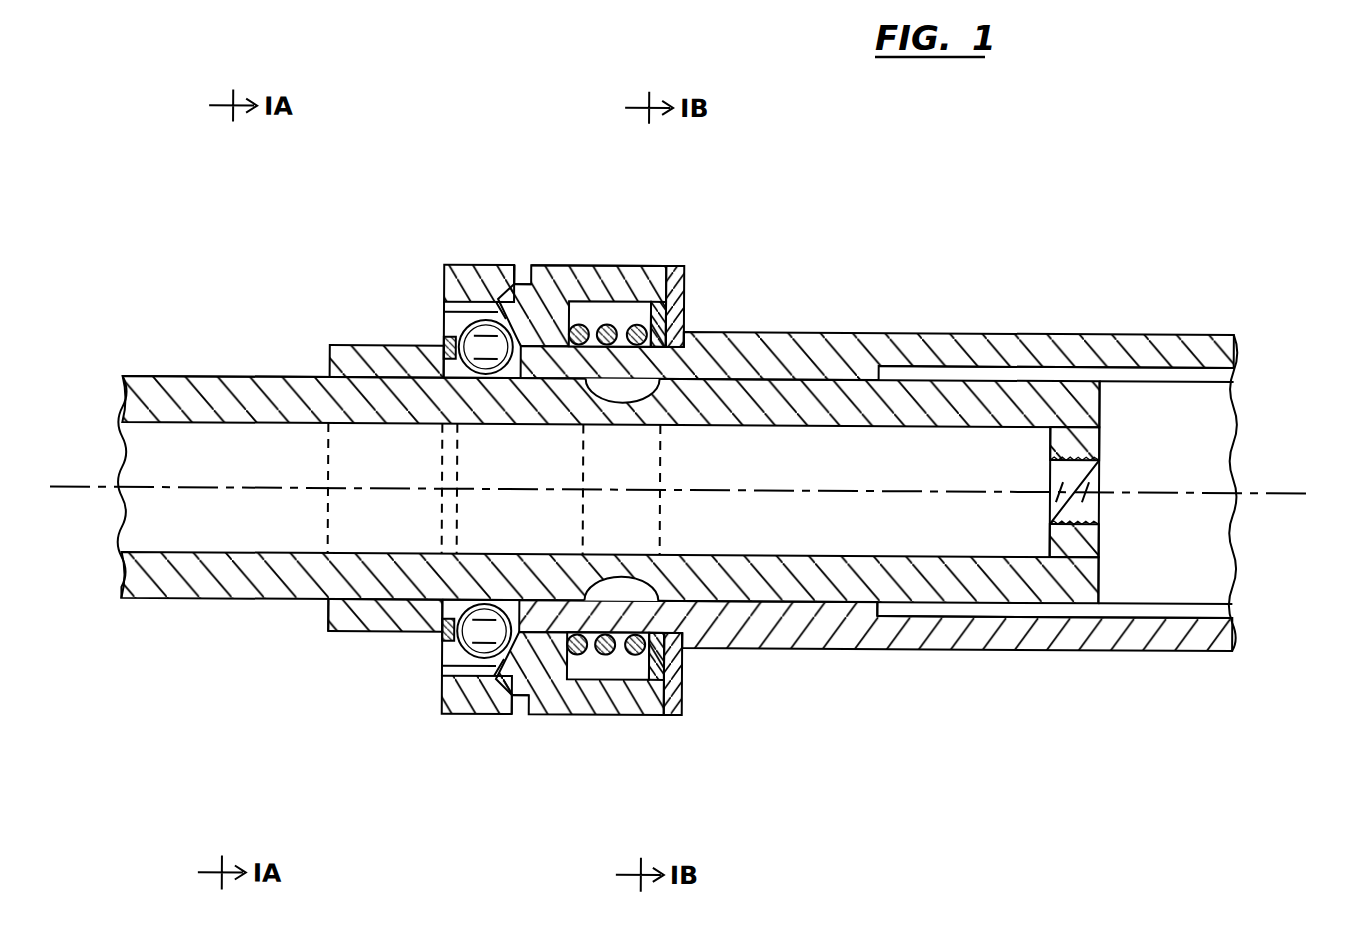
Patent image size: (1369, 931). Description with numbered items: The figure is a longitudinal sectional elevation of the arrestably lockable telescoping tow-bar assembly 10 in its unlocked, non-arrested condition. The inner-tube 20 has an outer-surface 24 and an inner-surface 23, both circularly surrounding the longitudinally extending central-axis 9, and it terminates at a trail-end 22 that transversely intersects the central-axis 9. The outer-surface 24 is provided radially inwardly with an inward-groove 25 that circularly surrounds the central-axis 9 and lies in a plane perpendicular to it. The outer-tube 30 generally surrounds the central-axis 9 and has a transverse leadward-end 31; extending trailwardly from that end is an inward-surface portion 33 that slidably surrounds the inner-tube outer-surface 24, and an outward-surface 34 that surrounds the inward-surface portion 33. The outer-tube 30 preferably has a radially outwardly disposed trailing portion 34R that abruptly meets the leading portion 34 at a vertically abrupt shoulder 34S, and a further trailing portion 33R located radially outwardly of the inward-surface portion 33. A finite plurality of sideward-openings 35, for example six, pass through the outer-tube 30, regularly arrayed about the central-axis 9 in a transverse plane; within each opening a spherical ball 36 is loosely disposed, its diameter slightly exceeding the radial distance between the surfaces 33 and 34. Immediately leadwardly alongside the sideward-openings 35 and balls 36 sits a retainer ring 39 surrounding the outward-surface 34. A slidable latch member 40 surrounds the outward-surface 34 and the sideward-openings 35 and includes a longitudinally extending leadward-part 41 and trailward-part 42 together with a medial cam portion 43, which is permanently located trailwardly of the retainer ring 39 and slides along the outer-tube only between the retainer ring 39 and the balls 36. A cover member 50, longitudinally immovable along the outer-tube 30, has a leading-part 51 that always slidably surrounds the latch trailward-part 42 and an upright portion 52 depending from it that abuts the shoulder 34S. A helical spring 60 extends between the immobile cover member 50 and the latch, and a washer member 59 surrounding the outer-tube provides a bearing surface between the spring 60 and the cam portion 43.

The central-axis 9 is at (1263, 478).
The arrestably lockable telescoping tow-bar assembly 10 is at (412, 124).
The inner-tube 20 is at (124, 374).
The trail-end 22 is at (1100, 428).
The inner-surface 23 is at (160, 553).
The outer-surface 24 is at (185, 378).
The inward-groove 25 is at (635, 392).
The outer-tube 30 is at (952, 330).
The leadward-end 31 is at (329, 356).
The inward-surface portion 33 is at (325, 605).
The trailing portion 33R is at (1210, 620).
The outward-surface 34 is at (340, 636).
The trailing portion 34R is at (1128, 332).
The shoulder 34S is at (688, 332).
The sideward-openings 35 is at (505, 385).
The spherical ball 36 is at (485, 489).
The retainer ring 39 is at (443, 347).
The slidable latch member 40 is at (466, 263).
The leadward-part 41 is at (440, 700).
The trailward-part 42 is at (522, 280).
The medial cam portion 43 is at (500, 310).
The cover member 50 is at (600, 262).
The leading-part 51 is at (575, 266).
The upright portion 52 is at (683, 285).
The washer member 59 is at (658, 300).
The helical spring 60 is at (630, 660).